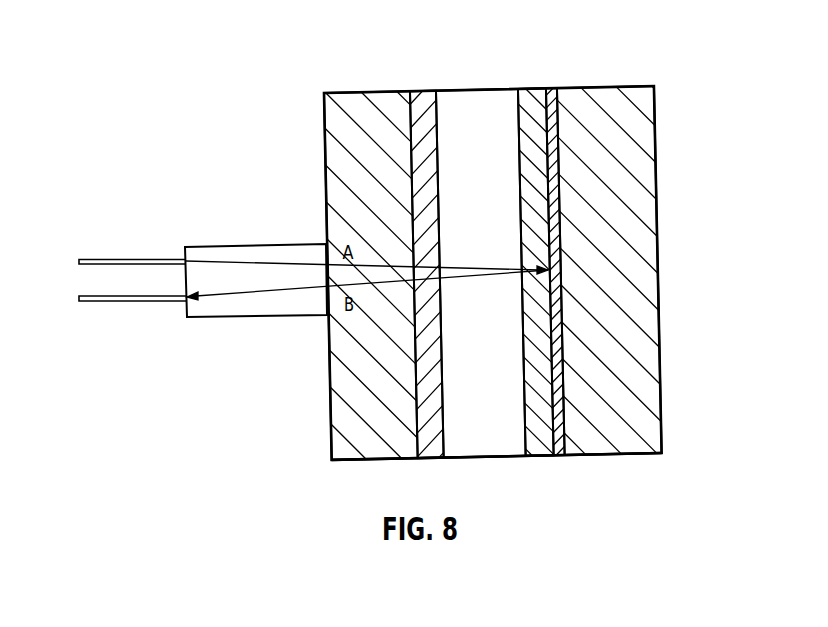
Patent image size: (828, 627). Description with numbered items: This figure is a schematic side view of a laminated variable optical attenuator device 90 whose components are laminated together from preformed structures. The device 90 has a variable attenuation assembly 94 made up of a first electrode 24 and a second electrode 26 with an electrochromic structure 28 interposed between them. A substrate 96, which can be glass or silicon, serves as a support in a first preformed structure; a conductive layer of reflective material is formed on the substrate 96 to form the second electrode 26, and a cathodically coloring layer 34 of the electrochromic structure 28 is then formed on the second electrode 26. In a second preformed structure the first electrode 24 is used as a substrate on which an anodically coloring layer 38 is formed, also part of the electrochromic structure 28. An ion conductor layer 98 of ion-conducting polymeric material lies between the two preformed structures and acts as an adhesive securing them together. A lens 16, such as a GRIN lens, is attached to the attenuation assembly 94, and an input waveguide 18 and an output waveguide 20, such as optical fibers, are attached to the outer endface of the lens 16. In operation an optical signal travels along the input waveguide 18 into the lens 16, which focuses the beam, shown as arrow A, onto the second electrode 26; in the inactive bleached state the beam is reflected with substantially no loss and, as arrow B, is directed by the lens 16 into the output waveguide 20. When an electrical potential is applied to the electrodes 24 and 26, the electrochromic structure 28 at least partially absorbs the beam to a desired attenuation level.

The laminated VOA device 90 is at (265, 120).
The first electrode 24 is at (360, 102).
The anodically coloring layer 38 is at (424, 388).
The ion conductor layer 98 is at (471, 207).
The electrochromic structure 28 is at (545, 77).
The cathodically coloring layer 34 is at (543, 372).
The second electrode 26 is at (555, 90).
The substrate 96 is at (637, 130).
The variable attenuation assembly 94 is at (330, 467).
The lens 16 is at (268, 250).
The input waveguide 18 is at (97, 258).
The output waveguide 20 is at (97, 303).